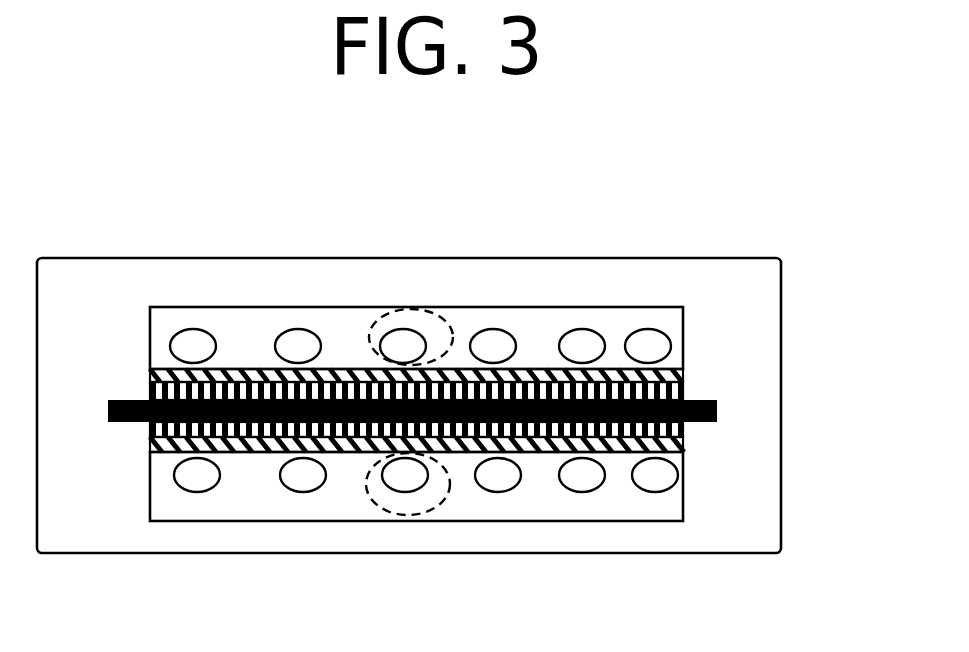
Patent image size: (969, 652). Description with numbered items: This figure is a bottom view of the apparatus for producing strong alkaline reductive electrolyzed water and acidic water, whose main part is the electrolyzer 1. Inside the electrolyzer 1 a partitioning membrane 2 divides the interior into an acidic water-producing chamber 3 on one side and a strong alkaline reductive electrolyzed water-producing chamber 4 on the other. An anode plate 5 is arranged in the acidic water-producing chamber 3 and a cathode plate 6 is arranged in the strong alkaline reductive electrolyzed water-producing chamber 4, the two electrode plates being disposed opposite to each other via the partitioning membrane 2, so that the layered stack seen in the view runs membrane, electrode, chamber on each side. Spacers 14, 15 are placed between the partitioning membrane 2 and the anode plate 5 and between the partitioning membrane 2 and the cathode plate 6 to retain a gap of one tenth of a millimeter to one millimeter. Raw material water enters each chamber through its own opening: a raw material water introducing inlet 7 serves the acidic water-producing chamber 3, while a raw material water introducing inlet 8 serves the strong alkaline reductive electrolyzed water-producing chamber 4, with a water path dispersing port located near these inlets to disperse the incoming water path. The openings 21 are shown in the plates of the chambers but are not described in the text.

The electrolyzer 1 is at (95, 258).
The partitioning membrane 2 is at (717, 407).
The acidic water-producing chamber 3 is at (552, 328).
The strong alkaline reductive electrolyzed water-producing chamber 4 is at (592, 502).
The anode plate 5 is at (683, 364).
The cathode plate 6 is at (683, 445).
The raw material water introducing inlet 7 is at (438, 327).
The raw material water introducing inlet 8 is at (413, 502).
The spacer 14 is at (255, 392).
The spacer 15 is at (252, 430).
The holes 21 is at (648, 340).